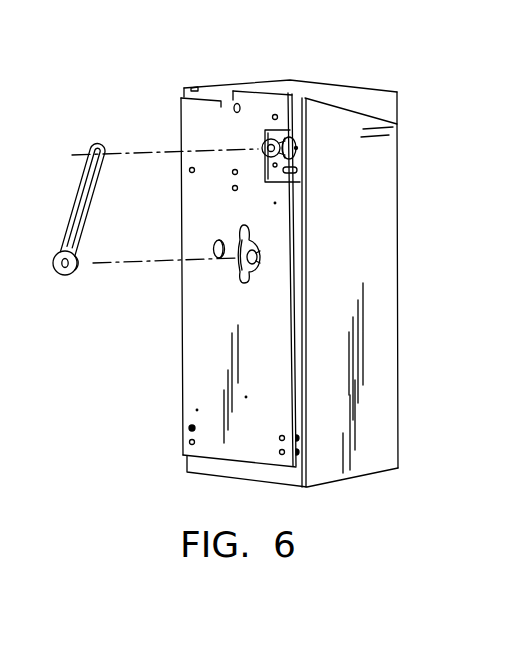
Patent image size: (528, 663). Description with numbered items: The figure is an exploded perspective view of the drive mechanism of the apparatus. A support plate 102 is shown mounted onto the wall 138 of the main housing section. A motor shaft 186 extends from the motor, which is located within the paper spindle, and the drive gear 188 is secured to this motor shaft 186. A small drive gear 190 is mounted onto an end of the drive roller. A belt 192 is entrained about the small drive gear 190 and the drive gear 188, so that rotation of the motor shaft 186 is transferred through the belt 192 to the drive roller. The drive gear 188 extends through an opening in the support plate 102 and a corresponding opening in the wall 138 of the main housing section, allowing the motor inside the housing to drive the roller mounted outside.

The support plate 102 is at (195, 402).
The wall 138 is at (300, 273).
The motor shaft 186 is at (252, 257).
The drive gear 188 is at (70, 276).
The small drive gear 190 is at (299, 138).
The belt 192 is at (100, 143).